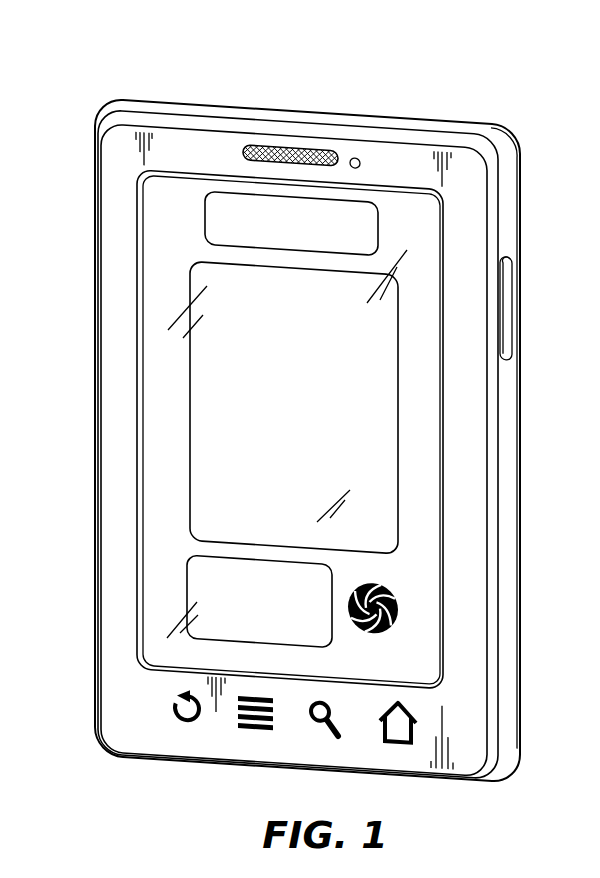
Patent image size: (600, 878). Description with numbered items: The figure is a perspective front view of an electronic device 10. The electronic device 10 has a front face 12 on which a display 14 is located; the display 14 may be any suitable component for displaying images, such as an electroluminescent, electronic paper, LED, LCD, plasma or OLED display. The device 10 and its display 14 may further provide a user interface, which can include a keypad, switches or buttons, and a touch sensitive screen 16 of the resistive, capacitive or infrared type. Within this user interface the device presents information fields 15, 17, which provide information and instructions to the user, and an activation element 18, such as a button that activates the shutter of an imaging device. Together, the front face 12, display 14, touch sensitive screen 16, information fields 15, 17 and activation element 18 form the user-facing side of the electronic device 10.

The electronic device 10 is at (117, 63).
The front face 12 is at (472, 188).
The display 14 is at (399, 328).
The information field 15 is at (205, 212).
The touch sensitive screen 16 is at (368, 460).
The information field 17 is at (188, 605).
The activation element 18 is at (400, 606).